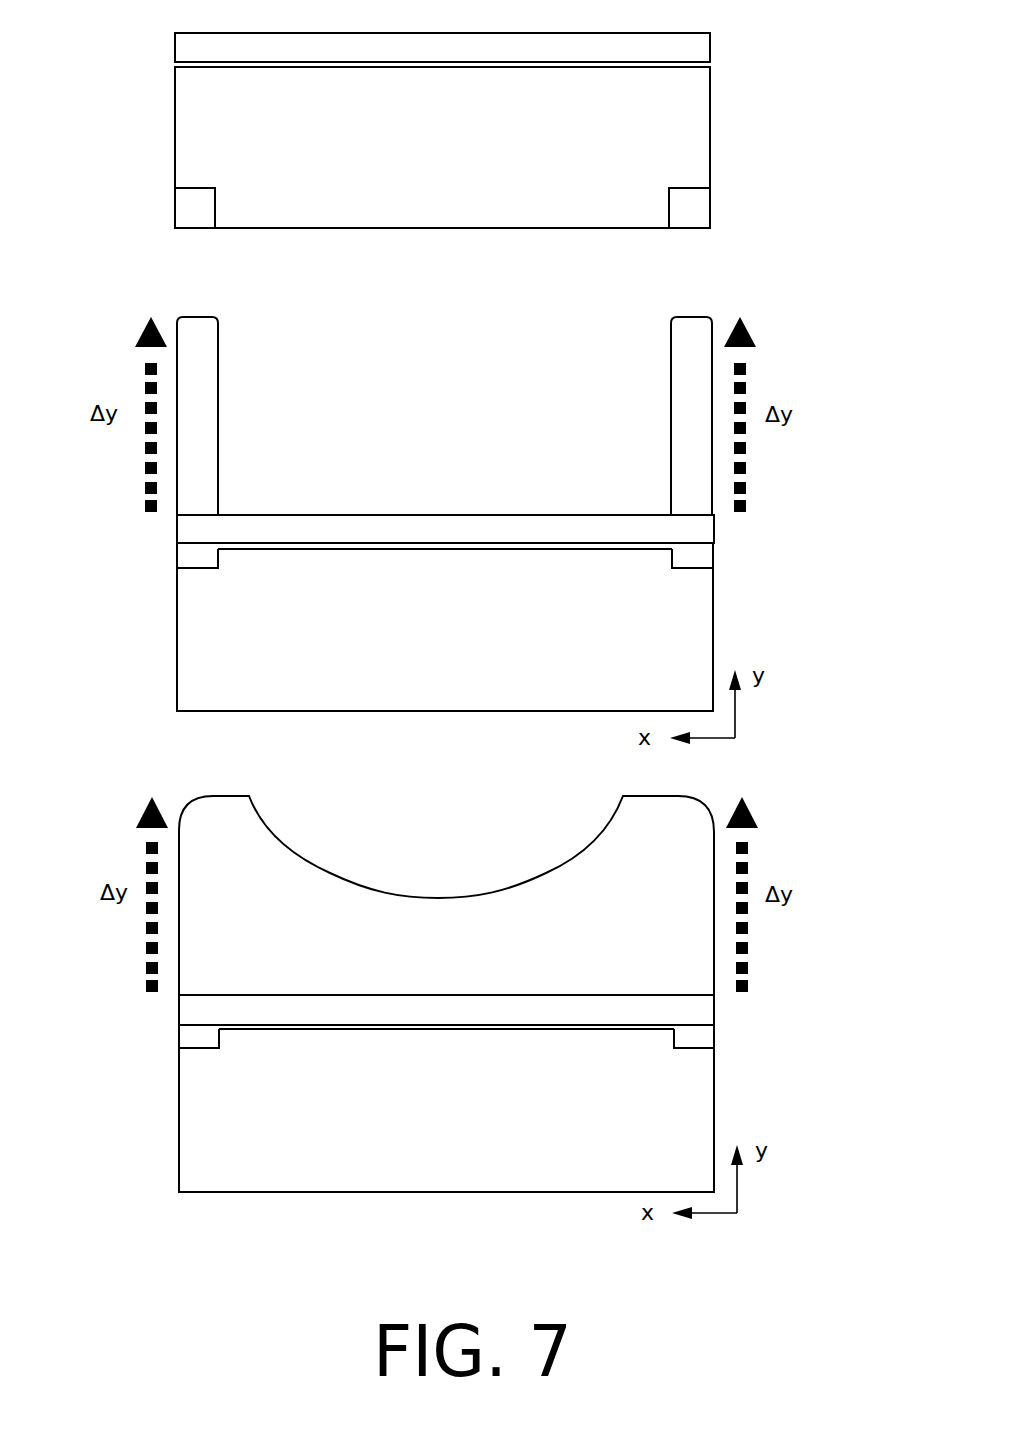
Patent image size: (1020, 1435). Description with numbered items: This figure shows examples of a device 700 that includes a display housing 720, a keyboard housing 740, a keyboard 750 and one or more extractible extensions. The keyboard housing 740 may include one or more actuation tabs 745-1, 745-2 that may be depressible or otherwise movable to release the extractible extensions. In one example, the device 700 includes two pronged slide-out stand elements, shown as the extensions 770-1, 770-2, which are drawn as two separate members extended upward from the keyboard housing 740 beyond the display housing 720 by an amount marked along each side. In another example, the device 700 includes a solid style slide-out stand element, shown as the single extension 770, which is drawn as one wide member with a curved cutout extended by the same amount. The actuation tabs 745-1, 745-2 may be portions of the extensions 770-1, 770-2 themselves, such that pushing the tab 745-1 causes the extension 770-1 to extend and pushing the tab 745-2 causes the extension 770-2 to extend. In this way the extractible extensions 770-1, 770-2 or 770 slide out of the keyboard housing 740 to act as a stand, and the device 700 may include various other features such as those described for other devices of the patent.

The device 700 is at (120, 48).
The display housing 720 is at (700, 52).
The keyboard housing 740 is at (690, 135).
The keyboard 750 is at (447, 631).
The actuation tab 745-1 is at (191, 207).
The actuation tab 745-2 is at (695, 210).
The extractible extension 770-1 is at (205, 382).
The extractible extension 770-2 is at (682, 392).
The extractible extension 770 is at (267, 855).